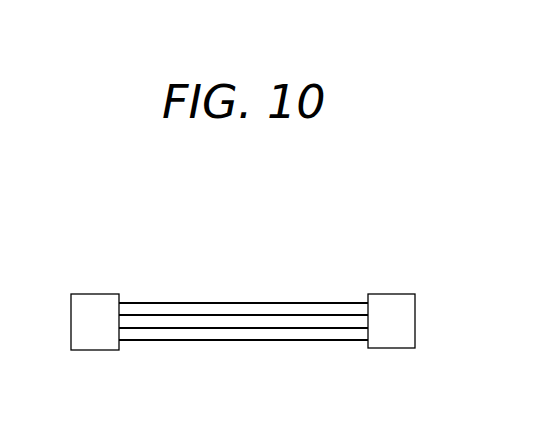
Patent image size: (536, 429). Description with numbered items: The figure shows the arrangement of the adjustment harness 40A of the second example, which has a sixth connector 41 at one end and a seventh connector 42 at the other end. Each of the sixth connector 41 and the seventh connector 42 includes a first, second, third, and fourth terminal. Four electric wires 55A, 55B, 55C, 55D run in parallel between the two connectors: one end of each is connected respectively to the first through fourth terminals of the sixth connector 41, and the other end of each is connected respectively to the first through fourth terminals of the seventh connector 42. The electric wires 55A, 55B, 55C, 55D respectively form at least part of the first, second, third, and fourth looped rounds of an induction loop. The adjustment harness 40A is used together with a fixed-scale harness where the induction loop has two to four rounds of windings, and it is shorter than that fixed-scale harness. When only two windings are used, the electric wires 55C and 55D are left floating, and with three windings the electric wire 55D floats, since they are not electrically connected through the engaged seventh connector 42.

The adjustment harness 40A is at (260, 202).
The sixth connector 41 is at (392, 294).
The seventh connector 42 is at (93, 294).
The electric wire 55A is at (161, 303).
The electric wire 55B is at (219, 315).
The electric wire 55C is at (282, 328).
The electric wire 55D is at (343, 340).